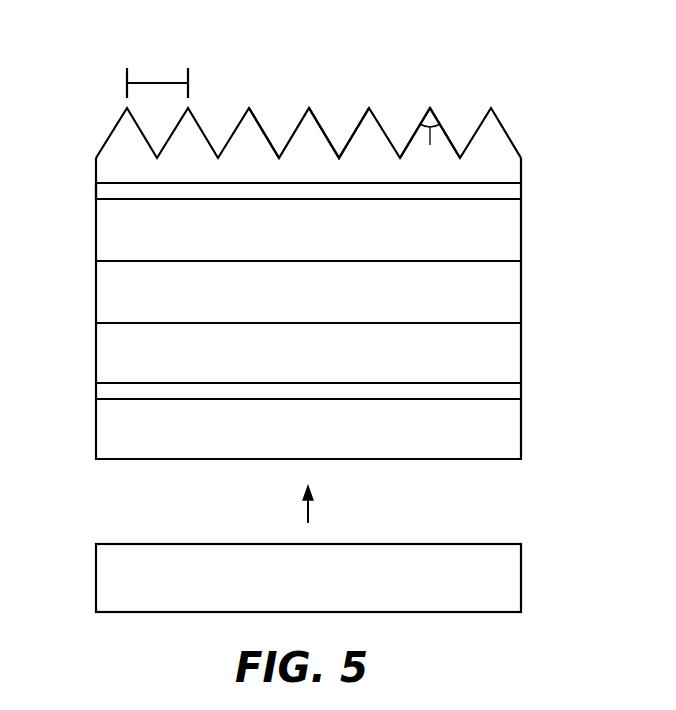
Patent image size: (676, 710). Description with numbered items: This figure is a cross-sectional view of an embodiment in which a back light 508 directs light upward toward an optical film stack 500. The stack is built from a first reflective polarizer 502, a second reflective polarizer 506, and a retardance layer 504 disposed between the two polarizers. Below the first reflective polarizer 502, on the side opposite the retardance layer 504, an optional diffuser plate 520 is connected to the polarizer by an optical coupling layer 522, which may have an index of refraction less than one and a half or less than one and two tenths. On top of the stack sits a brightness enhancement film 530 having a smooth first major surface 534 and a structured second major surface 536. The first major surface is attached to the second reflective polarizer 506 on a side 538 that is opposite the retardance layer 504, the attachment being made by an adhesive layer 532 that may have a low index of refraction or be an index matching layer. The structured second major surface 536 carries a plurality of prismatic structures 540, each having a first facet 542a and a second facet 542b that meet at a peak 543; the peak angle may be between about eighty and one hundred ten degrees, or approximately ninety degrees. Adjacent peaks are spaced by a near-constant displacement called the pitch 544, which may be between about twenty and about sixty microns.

The optical film stack 500 is at (85, 105).
The first reflective polarizer 502 is at (505, 350).
The retardance layer 504 is at (505, 291).
The second reflective polarizer 506 is at (505, 227).
The back light 508 is at (504, 579).
The diffuser plate 520 is at (505, 434).
The optical coupling layer 522 is at (505, 392).
The brightness enhancement film 530 is at (507, 178).
The adhesive layer 532 is at (505, 193).
The first major surface 534 is at (233, 183).
The second major surface 536 is at (260, 128).
The side 538 is at (127, 200).
The prismatic structures 540 is at (367, 142).
The first facet 542a is at (424, 126).
The second facet 542b is at (445, 131).
The peak 543 is at (425, 123).
The pitch 544 is at (155, 82).